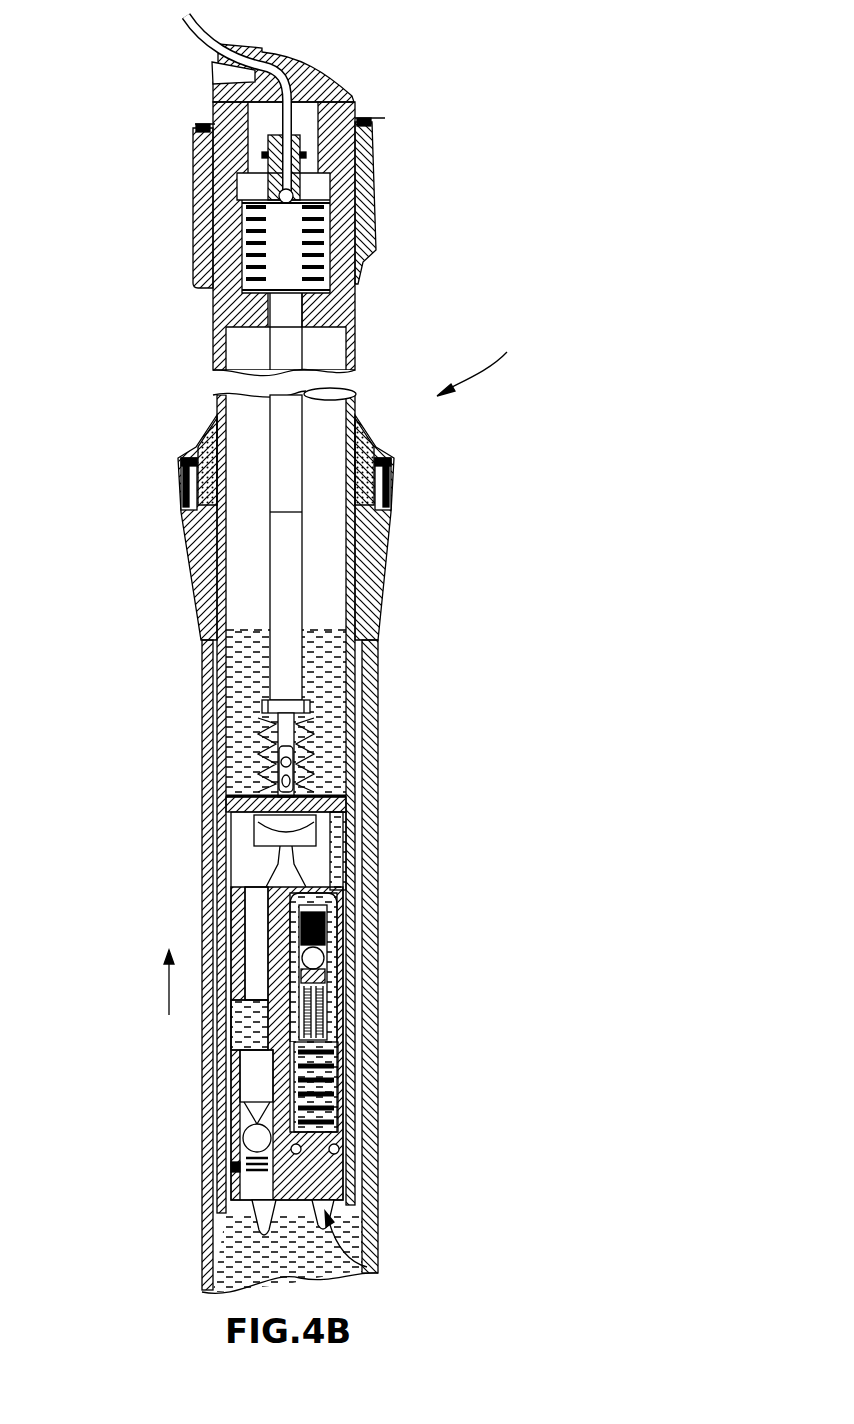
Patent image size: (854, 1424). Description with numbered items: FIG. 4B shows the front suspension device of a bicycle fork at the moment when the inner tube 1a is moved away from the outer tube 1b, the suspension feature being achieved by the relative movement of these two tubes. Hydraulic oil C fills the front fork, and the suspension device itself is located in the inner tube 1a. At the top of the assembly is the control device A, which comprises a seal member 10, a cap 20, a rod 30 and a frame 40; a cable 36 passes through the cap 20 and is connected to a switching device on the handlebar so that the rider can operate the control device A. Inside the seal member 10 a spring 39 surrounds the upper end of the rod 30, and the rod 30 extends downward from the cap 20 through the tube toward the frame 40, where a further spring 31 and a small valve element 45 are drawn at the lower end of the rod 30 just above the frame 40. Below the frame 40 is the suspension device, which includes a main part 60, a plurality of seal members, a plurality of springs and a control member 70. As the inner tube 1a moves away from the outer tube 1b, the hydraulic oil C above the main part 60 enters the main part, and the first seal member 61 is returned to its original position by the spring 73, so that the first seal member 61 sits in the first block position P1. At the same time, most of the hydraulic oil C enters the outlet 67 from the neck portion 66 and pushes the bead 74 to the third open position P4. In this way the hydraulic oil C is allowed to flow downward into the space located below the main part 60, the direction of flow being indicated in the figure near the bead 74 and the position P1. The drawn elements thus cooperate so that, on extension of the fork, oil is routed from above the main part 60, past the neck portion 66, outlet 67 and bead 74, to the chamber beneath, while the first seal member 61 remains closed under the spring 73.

The cable 36 is at (195, 45).
The cap 20 is at (303, 78).
The spring 39 is at (250, 252).
The seal member 10 is at (350, 303).
The inner tube 1a is at (286, 196).
The control device A is at (479, 361).
The rod 30 is at (286, 545).
The outer tube 1b is at (200, 647).
The spring 31 is at (283, 728).
The valve 45 is at (288, 765).
The frame 40 is at (280, 803).
The control member 70 is at (322, 893).
The main part 60 is at (286, 1009).
The spring 73 is at (338, 1003).
The neck portion 66 is at (272, 1034).
The first seal member 61 is at (340, 1070).
The outlet 67 is at (248, 1085).
The bead 74 is at (257, 1138).
The third open position P4 is at (235, 1166).
The hydraulic oil C is at (277, 1258).
The first block position P1 is at (380, 1270).